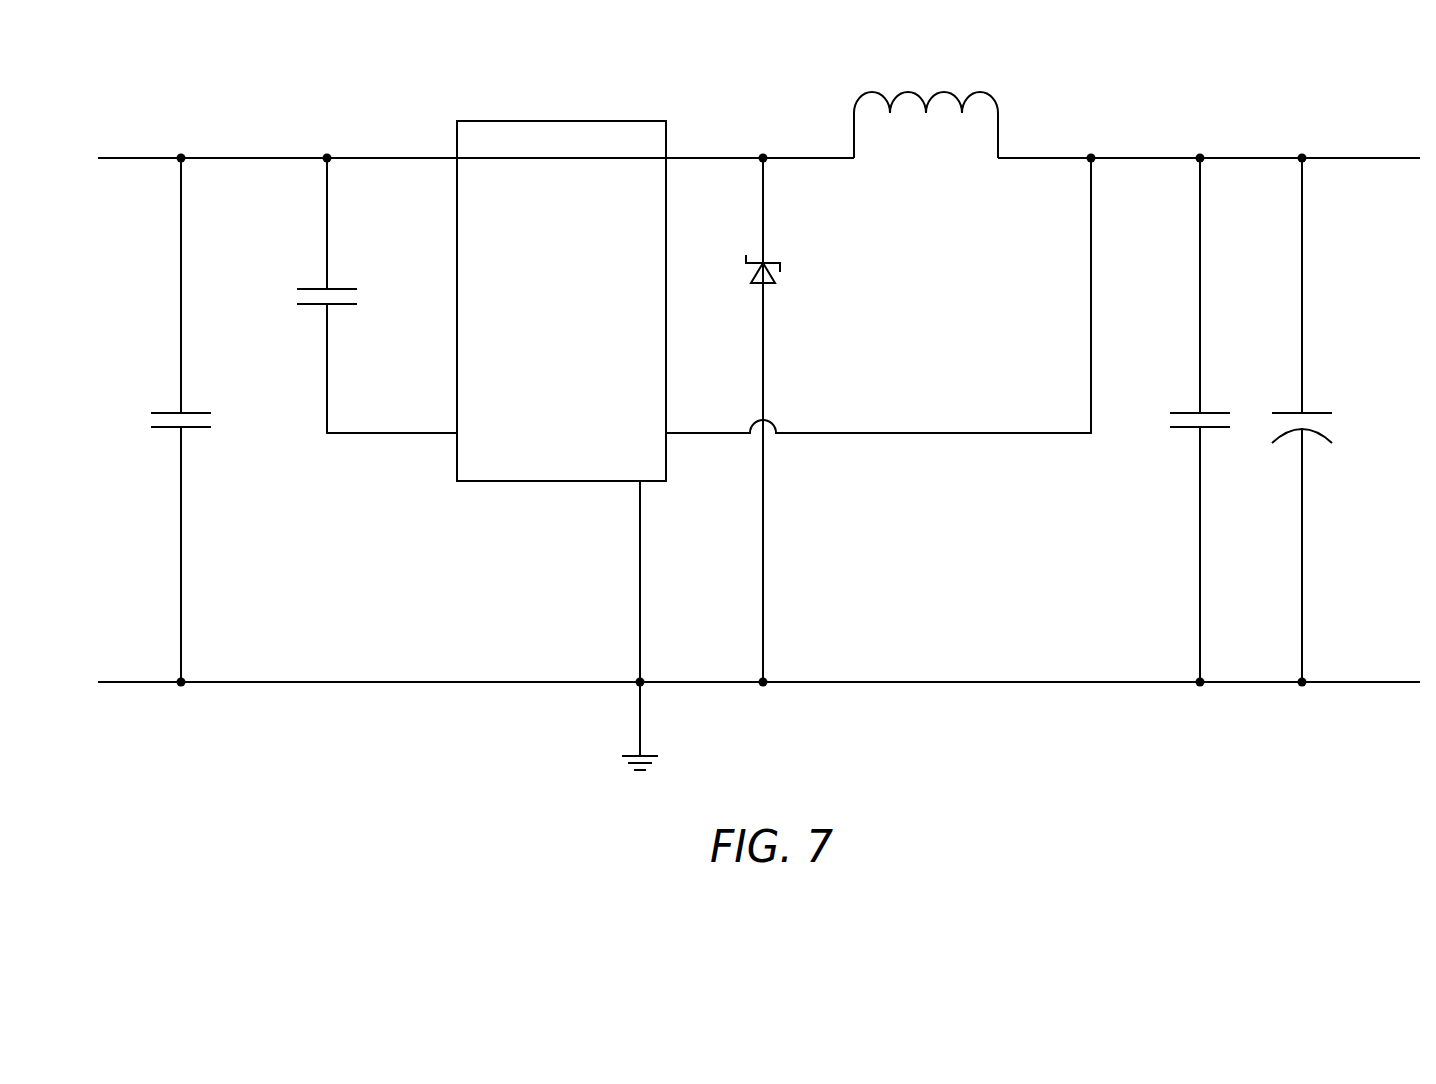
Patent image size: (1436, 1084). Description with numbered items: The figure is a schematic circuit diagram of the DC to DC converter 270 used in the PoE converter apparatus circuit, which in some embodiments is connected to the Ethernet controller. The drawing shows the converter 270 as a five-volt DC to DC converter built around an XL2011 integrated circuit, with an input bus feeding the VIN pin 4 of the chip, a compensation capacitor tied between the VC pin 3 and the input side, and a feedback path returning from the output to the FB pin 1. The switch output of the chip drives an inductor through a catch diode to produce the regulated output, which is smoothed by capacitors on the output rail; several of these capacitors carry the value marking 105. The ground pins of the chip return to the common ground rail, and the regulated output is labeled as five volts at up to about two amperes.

The DC to DC converter 270 is at (672, 49).
The capacitor 105 is at (698, 420).
The VIN pin 4 is at (444, 150).
The VC pin 3 is at (448, 427).
The FB pin 1 is at (684, 425).